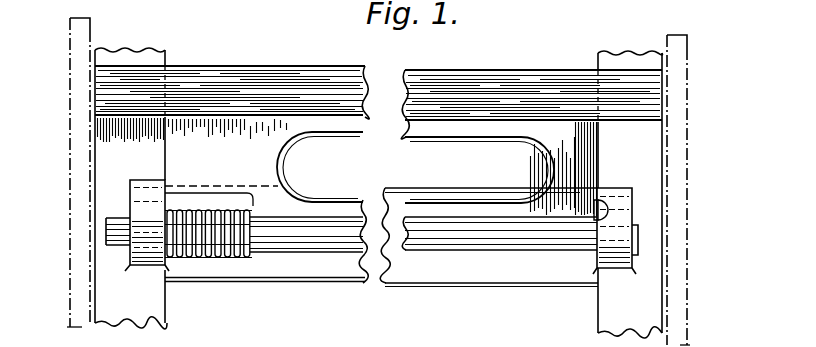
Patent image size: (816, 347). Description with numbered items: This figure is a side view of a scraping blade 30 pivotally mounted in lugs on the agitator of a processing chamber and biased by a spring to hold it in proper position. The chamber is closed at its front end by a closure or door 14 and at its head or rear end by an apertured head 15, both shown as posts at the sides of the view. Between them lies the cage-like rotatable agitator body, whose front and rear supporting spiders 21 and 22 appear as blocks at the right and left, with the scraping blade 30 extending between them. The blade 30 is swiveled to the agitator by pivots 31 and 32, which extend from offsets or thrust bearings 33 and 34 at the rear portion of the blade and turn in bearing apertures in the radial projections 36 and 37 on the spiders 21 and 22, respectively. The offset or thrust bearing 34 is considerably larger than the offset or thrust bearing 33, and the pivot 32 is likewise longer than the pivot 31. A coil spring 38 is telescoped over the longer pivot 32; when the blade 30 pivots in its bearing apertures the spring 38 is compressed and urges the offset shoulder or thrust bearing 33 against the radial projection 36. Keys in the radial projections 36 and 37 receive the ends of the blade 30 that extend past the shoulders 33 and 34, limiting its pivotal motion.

The closure or door 14 is at (683, 151).
The apertured head 15 is at (77, 88).
The front supporting spider 21 is at (613, 312).
The rear supporting spider 22 is at (150, 306).
The scraping blade 30 is at (527, 80).
The pivot 31 is at (638, 238).
The pivot 32 is at (110, 233).
The offset or thrust bearing 33 is at (597, 192).
The offset or thrust bearing 34 is at (250, 203).
The radial projection 36 is at (603, 245).
The radial projection 37 is at (137, 208).
The coil spring 38 is at (212, 257).